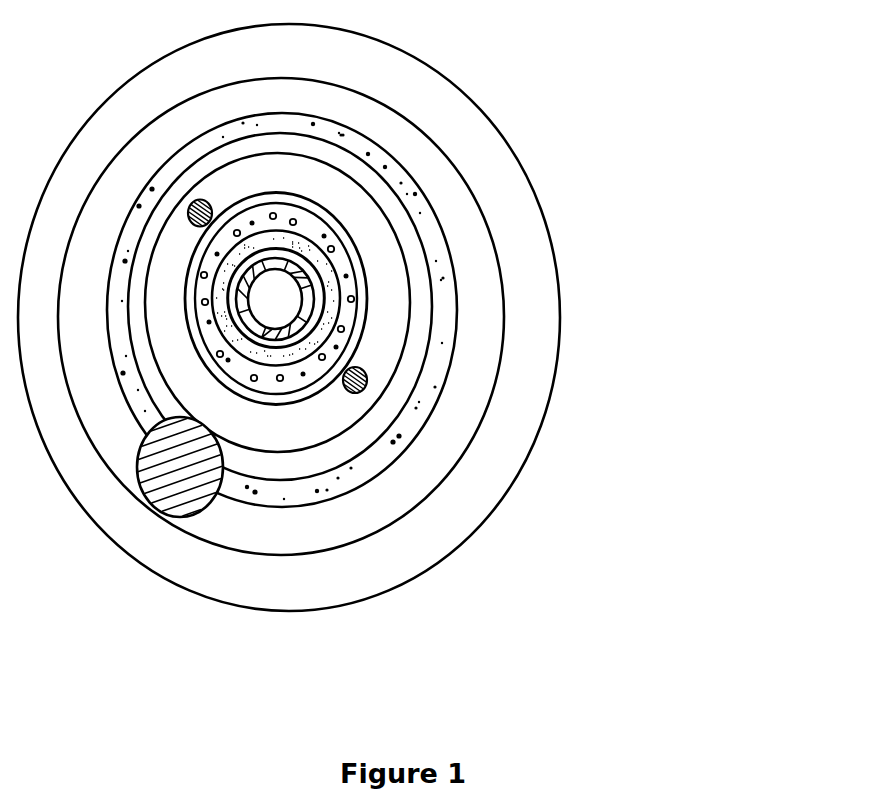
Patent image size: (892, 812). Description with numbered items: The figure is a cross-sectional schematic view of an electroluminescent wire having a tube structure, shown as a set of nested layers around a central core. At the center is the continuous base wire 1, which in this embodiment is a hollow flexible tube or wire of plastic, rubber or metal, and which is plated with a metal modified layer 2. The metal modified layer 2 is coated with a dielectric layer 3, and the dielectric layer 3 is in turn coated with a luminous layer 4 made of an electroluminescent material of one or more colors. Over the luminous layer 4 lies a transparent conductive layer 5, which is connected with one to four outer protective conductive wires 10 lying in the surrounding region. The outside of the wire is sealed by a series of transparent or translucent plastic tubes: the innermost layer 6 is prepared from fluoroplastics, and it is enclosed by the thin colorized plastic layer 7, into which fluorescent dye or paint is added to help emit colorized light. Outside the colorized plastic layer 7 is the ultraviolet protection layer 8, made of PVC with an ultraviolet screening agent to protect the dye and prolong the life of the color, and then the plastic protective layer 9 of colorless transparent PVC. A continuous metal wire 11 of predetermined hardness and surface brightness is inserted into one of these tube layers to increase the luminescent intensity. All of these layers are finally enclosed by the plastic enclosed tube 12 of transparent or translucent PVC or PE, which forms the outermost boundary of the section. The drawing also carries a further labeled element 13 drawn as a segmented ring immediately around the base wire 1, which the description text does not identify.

The base wire 1 is at (288, 303).
The metal modified layer 2 is at (288, 254).
The dielectric layer 3 is at (275, 362).
The luminous layer 4 is at (287, 213).
The transparent conductive layer 5 is at (262, 402).
The innermost plastic tube layer 6 is at (280, 165).
The colorized plastic layer 7 is at (282, 465).
The ultraviolet protection layer 8 is at (305, 121).
The plastic protective layer 9 is at (277, 543).
The outer protective conductive wire 10 is at (366, 381).
The metal wire 11 is at (185, 490).
The plastic enclosed tube 12 is at (285, 44).
The segmented hatched ring 13 is at (275, 282).